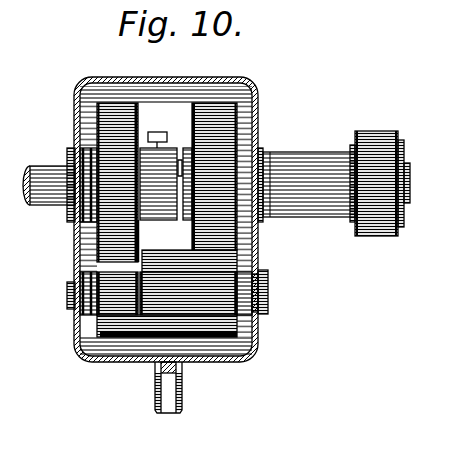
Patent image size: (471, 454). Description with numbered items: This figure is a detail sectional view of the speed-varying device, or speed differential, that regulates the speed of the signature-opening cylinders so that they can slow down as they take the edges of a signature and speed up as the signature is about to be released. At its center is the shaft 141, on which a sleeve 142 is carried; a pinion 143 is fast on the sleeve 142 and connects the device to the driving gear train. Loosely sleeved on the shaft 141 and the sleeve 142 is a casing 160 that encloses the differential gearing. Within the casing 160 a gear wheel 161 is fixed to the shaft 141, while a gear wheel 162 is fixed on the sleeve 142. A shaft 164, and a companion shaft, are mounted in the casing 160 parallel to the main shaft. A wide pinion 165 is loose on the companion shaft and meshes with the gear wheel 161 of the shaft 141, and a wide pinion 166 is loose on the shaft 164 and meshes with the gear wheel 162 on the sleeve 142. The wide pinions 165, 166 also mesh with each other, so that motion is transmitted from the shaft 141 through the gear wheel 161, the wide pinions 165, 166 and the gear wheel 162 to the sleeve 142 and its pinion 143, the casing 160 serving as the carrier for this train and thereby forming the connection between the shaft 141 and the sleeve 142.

The casing 160 is at (107, 78).
The gear wheel 161 is at (107, 120).
The shaft 141 is at (55, 172).
The gear wheel 162 is at (252, 110).
The sleeve 142 is at (281, 155).
The pinion 143 is at (365, 133).
The shaft 164 is at (66, 297).
The wide pinion 165 is at (102, 318).
The wide pinion 166 is at (257, 337).